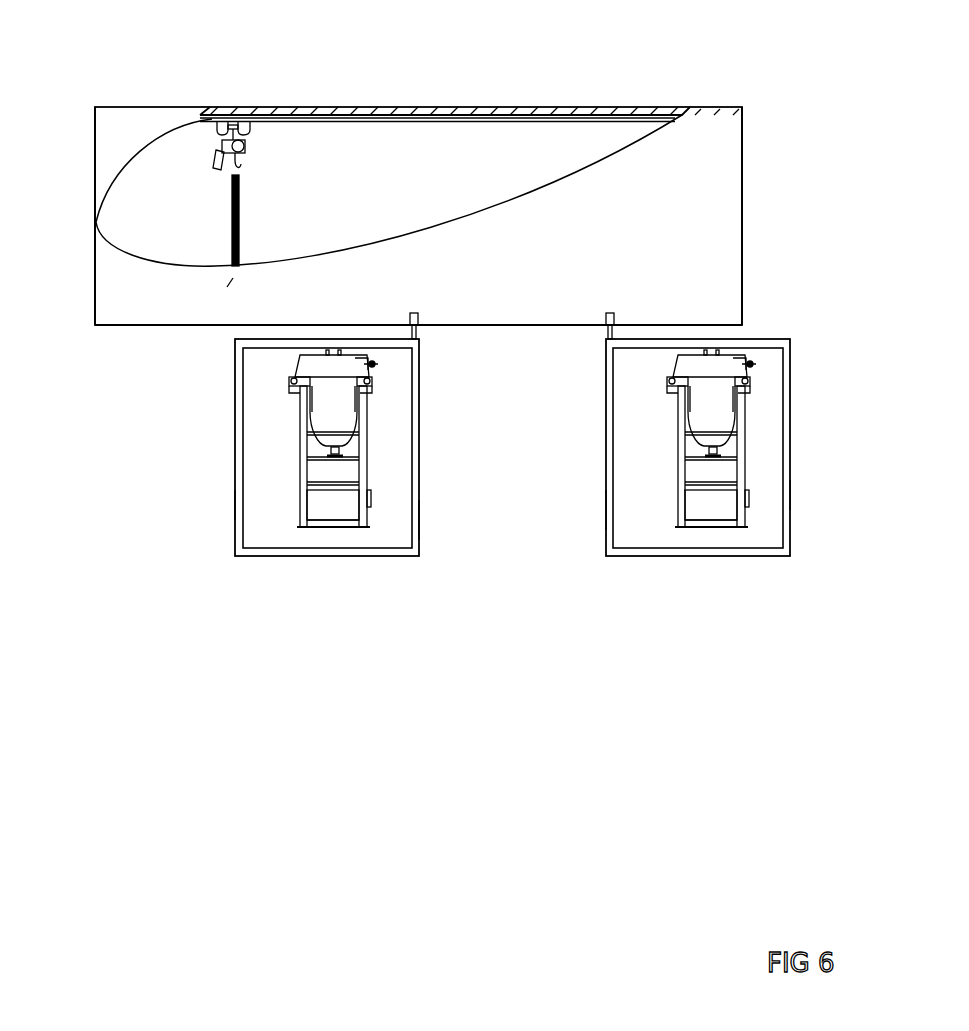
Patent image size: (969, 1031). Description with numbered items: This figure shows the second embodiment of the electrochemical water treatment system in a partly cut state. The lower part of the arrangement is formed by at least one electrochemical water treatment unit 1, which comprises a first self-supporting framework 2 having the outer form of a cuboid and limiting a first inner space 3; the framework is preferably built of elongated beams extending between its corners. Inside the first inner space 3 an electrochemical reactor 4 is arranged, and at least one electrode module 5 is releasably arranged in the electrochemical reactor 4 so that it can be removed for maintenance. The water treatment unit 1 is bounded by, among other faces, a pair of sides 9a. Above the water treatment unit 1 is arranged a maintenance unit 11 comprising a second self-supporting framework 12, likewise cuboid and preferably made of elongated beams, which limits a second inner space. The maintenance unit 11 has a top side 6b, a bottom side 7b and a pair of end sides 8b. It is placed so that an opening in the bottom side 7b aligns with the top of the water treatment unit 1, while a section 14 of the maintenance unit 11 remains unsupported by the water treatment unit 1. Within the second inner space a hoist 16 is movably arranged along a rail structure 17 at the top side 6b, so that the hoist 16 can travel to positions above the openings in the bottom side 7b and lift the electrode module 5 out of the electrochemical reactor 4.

The electrochemical water treatment unit 1 is at (310, 572).
The first self-supporting framework 2 is at (606, 415).
The first inner space 3 is at (273, 447).
The electrochemical reactor 4 is at (652, 450).
The electrode module 5 is at (235, 237).
The top side 6b is at (595, 105).
The bottom side 7b is at (470, 327).
The end side 8b is at (93, 198).
The side 9a is at (604, 508).
The maintenance unit 11 is at (712, 92).
The second self-supporting framework 12 is at (493, 112).
The section 14 is at (165, 357).
The hoist 16 is at (256, 120).
The rail structure 17 is at (333, 122).